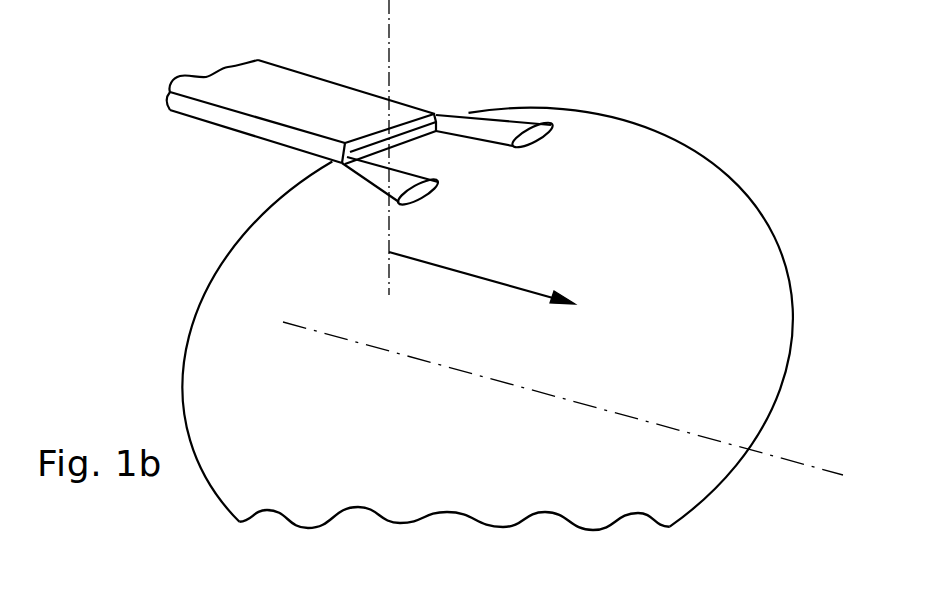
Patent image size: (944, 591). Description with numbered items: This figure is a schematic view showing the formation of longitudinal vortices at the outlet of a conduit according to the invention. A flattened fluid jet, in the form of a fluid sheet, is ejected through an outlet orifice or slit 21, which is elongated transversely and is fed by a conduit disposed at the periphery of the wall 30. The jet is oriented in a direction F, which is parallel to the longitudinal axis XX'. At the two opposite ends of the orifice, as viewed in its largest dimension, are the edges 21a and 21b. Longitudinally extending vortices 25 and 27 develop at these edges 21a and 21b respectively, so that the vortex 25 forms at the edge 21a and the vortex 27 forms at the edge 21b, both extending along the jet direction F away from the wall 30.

The outlet orifice or slit 21 is at (293, 88).
The edge of the orifice 21a is at (443, 117).
The edge of the orifice 21b is at (342, 164).
The longitudinally extending vortex 25 is at (505, 130).
The longitudinally extending vortex 27 is at (373, 185).
The wall 30 is at (624, 104).
The direction of the jet F is at (515, 279).
The longitudinal axis XX' is at (583, 398).